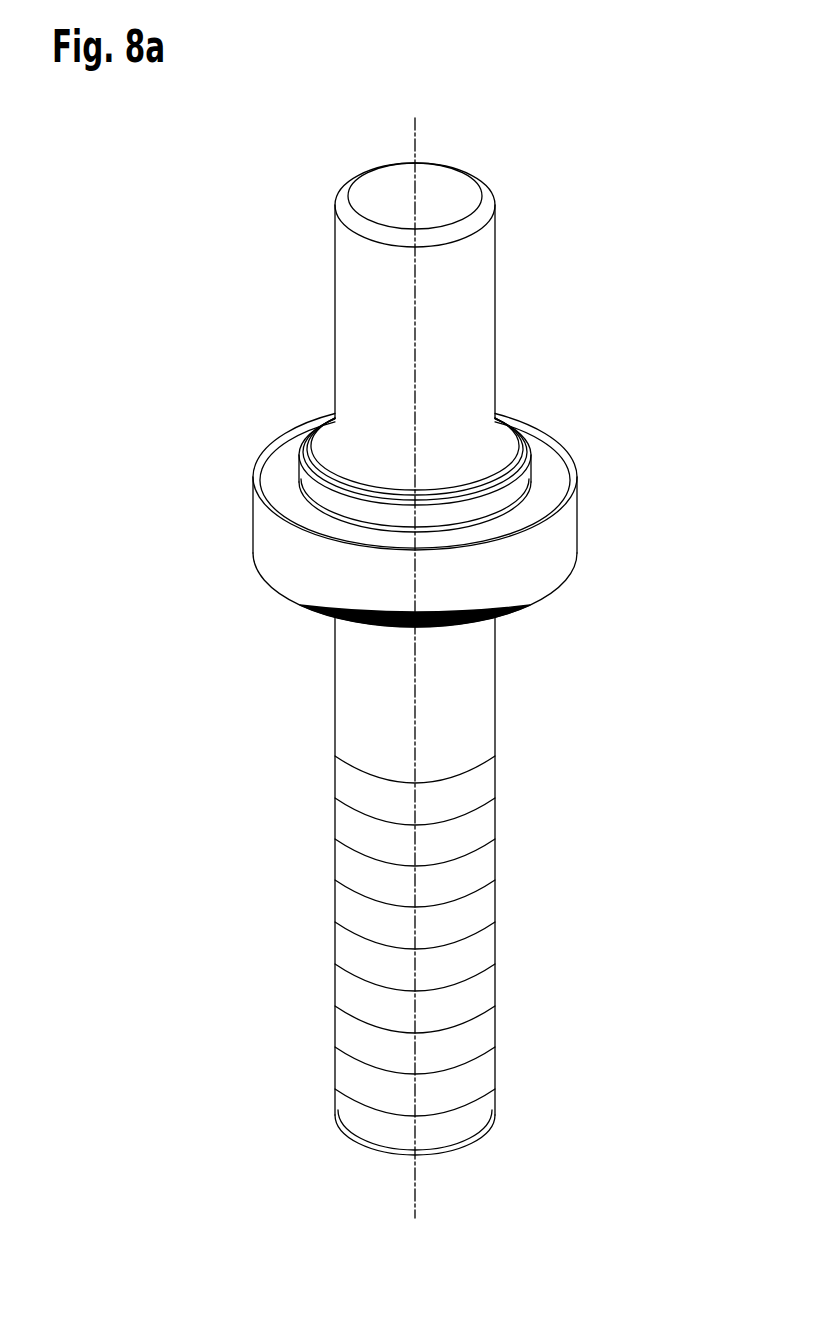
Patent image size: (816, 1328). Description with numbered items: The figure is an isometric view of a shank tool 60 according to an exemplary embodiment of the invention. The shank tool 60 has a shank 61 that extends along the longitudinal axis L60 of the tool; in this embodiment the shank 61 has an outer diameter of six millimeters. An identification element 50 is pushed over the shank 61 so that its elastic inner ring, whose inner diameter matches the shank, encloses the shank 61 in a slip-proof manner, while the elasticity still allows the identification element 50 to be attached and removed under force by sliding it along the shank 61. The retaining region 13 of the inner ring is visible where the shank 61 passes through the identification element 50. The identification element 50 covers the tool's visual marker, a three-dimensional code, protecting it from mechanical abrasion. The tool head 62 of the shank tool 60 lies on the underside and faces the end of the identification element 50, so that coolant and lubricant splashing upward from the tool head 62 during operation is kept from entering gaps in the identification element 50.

The shank tool 60 is at (437, 632).
The shank 61 is at (467, 690).
The tool head 62 is at (360, 1082).
The identification element 50 is at (290, 447).
The retaining region 13 is at (507, 440).
The longitudinal axis of the shank tool L60 is at (417, 1205).